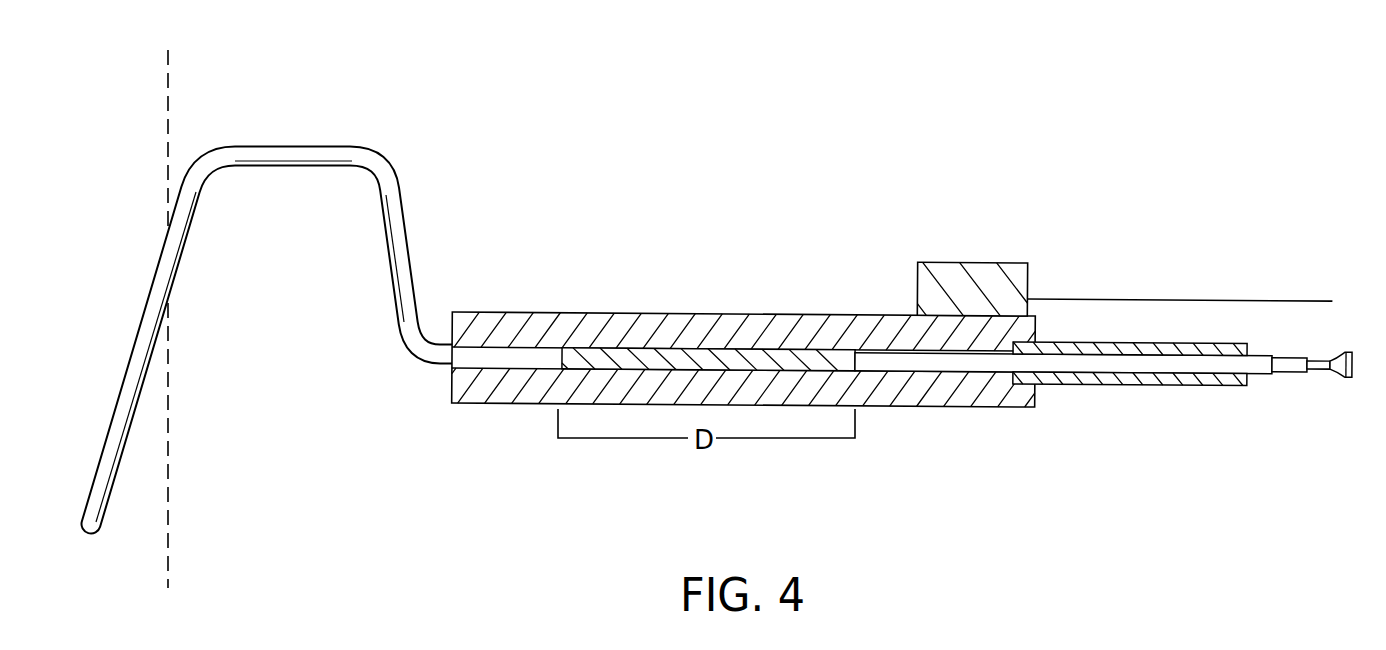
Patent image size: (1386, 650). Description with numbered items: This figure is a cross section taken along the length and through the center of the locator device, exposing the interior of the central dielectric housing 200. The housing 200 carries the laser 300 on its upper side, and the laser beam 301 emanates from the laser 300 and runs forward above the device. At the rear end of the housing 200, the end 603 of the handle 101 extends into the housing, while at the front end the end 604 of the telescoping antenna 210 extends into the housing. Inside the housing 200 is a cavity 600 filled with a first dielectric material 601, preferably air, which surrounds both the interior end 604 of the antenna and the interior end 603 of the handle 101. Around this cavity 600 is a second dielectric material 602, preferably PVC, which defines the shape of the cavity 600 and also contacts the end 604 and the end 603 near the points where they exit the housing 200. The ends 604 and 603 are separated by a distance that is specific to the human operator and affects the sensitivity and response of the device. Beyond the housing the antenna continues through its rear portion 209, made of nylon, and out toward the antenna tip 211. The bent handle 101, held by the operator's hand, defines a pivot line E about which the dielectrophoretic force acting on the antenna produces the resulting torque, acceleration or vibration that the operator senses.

The handle 101 is at (160, 333).
The central dielectric housing 200 is at (480, 312).
The cavity 600 is at (644, 347).
The first dielectric material 601 is at (725, 365).
The second dielectric material 602 is at (798, 332).
The end of the handle 603 is at (497, 356).
The end of the telescoping antenna 604 is at (916, 357).
The laser 300 is at (957, 259).
The laser beam 301 is at (1213, 295).
The rear portion of the antenna 209 is at (1080, 382).
The telescoping antenna 210 is at (1317, 370).
The end head 211 is at (1333, 372).
The pivot line E is at (168, 508).